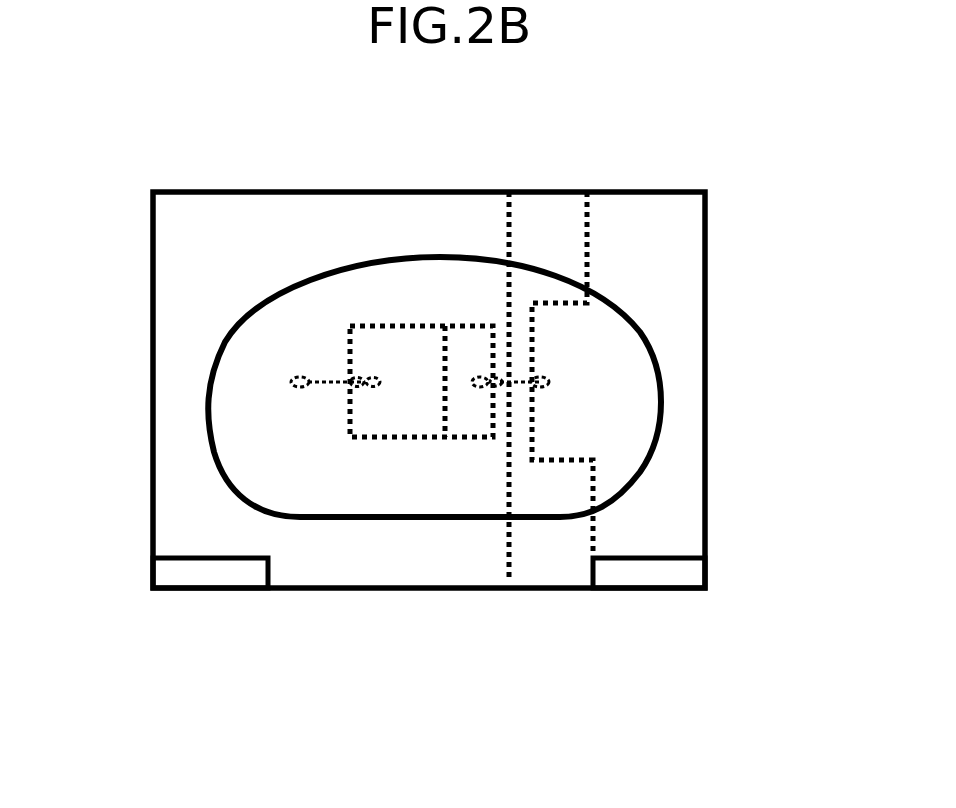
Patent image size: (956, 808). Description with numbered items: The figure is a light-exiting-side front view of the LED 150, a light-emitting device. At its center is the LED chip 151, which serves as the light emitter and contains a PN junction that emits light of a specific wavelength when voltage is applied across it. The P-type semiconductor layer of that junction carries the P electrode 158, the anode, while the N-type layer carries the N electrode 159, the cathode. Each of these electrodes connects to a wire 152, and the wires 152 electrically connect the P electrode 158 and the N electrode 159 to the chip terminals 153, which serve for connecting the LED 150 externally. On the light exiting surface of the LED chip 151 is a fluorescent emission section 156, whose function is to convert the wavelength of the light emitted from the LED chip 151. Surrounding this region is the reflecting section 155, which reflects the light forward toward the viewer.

The LED 150 is at (435, 597).
The LED chip 151 is at (380, 327).
The wire 152 is at (290, 382).
The chip terminal 153 is at (244, 572).
The reflecting section 155 is at (247, 307).
The fluorescent emission section 156 is at (302, 306).
The P electrode 158 is at (467, 337).
The N electrode 159 is at (368, 353).